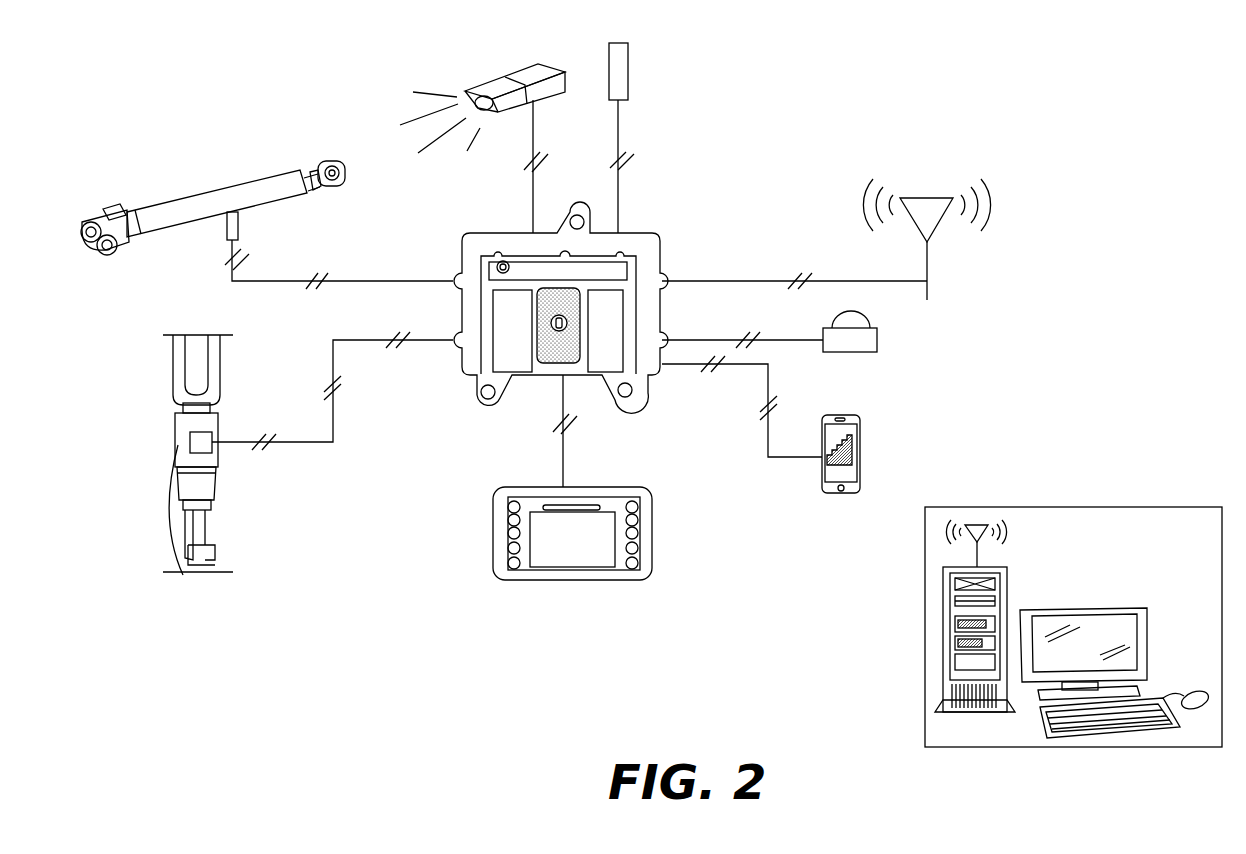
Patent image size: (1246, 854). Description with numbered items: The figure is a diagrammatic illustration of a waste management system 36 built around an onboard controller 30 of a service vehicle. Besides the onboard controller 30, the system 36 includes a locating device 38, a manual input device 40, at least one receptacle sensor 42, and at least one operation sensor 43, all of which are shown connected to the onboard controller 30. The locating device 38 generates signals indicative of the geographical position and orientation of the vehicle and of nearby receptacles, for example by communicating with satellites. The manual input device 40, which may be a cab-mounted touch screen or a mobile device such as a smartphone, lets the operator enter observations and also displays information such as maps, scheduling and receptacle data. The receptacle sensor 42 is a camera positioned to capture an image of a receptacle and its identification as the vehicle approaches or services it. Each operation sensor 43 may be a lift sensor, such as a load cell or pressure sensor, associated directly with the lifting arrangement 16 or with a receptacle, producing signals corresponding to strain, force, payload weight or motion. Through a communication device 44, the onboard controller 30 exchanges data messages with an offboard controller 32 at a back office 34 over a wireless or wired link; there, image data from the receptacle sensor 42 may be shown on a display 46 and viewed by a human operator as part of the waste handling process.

The lifting arrangement 16 is at (165, 202).
The onboard controller 30 is at (667, 240).
The offboard controller 32 is at (1007, 595).
The back office 34 is at (922, 695).
The waste management system 36 is at (898, 60).
The locating device 38 is at (878, 342).
The manual input device 40 is at (860, 443).
The receptacle sensor 42 is at (525, 68).
The operation sensor 43 is at (238, 226).
The communication device 44 is at (928, 260).
The display 46 is at (218, 478).